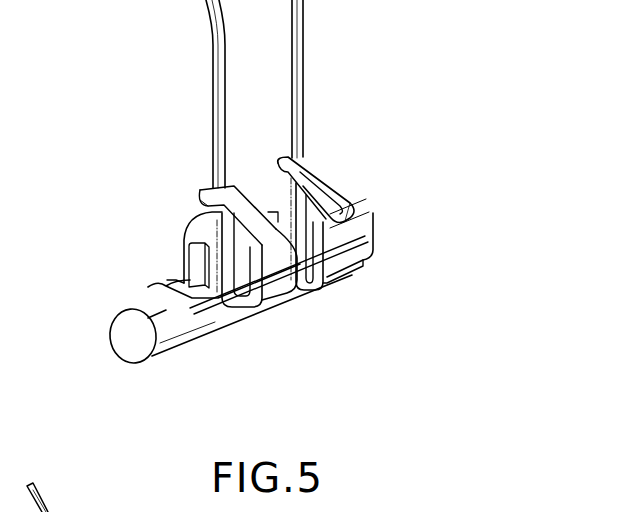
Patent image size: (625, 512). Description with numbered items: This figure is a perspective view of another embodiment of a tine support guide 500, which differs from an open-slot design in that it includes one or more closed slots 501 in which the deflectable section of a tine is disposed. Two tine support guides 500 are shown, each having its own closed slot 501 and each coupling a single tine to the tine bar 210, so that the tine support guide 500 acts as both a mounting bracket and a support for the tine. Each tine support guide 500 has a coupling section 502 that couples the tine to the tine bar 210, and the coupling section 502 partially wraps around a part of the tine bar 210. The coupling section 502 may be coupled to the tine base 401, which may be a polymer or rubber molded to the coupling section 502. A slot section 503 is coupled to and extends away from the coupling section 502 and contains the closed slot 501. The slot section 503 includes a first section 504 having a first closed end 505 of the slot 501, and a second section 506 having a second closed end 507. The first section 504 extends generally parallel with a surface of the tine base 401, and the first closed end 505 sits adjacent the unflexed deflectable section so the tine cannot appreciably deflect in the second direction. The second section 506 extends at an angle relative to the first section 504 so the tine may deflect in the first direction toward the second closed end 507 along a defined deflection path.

The tine bar 210 is at (128, 340).
The tine base 401 is at (205, 243).
The tine support guide 500 is at (277, 298).
The closed slot 501 is at (243, 218).
The coupling section 502 is at (147, 286).
The slot section 503 is at (200, 200).
The first section 504 is at (207, 187).
The first closed end 505 is at (213, 188).
The second section 506 is at (243, 240).
The second closed end 507 is at (268, 250).